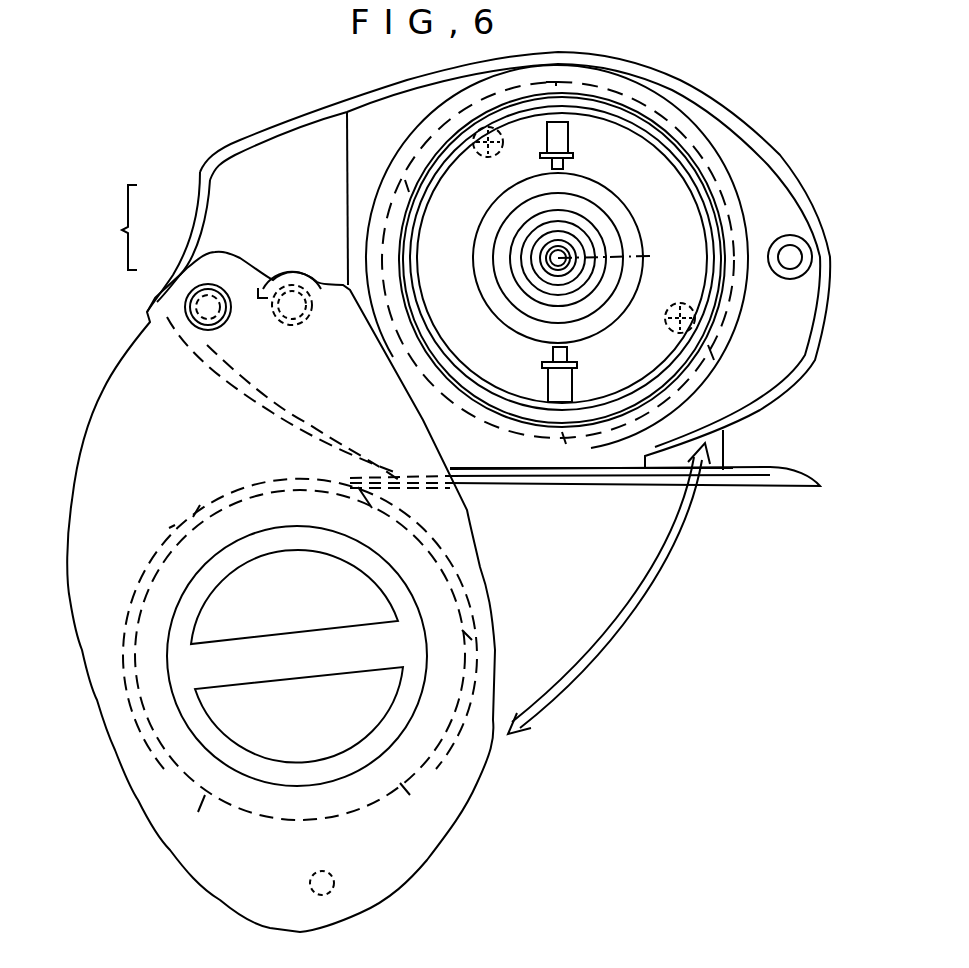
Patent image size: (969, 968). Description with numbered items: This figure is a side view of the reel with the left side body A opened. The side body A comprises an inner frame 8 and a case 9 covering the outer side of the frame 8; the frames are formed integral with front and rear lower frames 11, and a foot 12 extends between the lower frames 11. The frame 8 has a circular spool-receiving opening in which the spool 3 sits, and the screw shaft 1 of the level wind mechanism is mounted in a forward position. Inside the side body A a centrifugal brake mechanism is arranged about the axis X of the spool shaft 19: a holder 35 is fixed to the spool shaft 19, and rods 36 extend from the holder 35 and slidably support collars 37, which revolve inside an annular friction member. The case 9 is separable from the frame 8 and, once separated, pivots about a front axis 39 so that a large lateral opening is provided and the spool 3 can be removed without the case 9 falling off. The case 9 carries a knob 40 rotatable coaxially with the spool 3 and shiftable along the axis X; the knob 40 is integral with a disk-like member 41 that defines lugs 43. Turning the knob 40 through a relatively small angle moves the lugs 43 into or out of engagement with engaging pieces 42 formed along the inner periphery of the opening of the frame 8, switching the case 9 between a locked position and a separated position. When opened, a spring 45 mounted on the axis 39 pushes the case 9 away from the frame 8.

The screw shaft 1 is at (285, 338).
The spool 3 is at (403, 241).
The inner frame 8 is at (190, 236).
The case 9 is at (168, 270).
The lower frame 11 is at (717, 445).
The foot 12 is at (741, 487).
The spool shaft 19 is at (568, 241).
The holder 35 is at (482, 272).
The rod 36 is at (542, 160).
The collar 37 is at (568, 140).
The front axis 39 is at (207, 320).
The knob 40 is at (183, 603).
The disk-like member 41 is at (173, 537).
The engaging piece 42 is at (405, 183).
The lug 43 is at (238, 478).
The spring 45 is at (212, 290).
The left side body A is at (117, 227).
The axis X is at (619, 257).